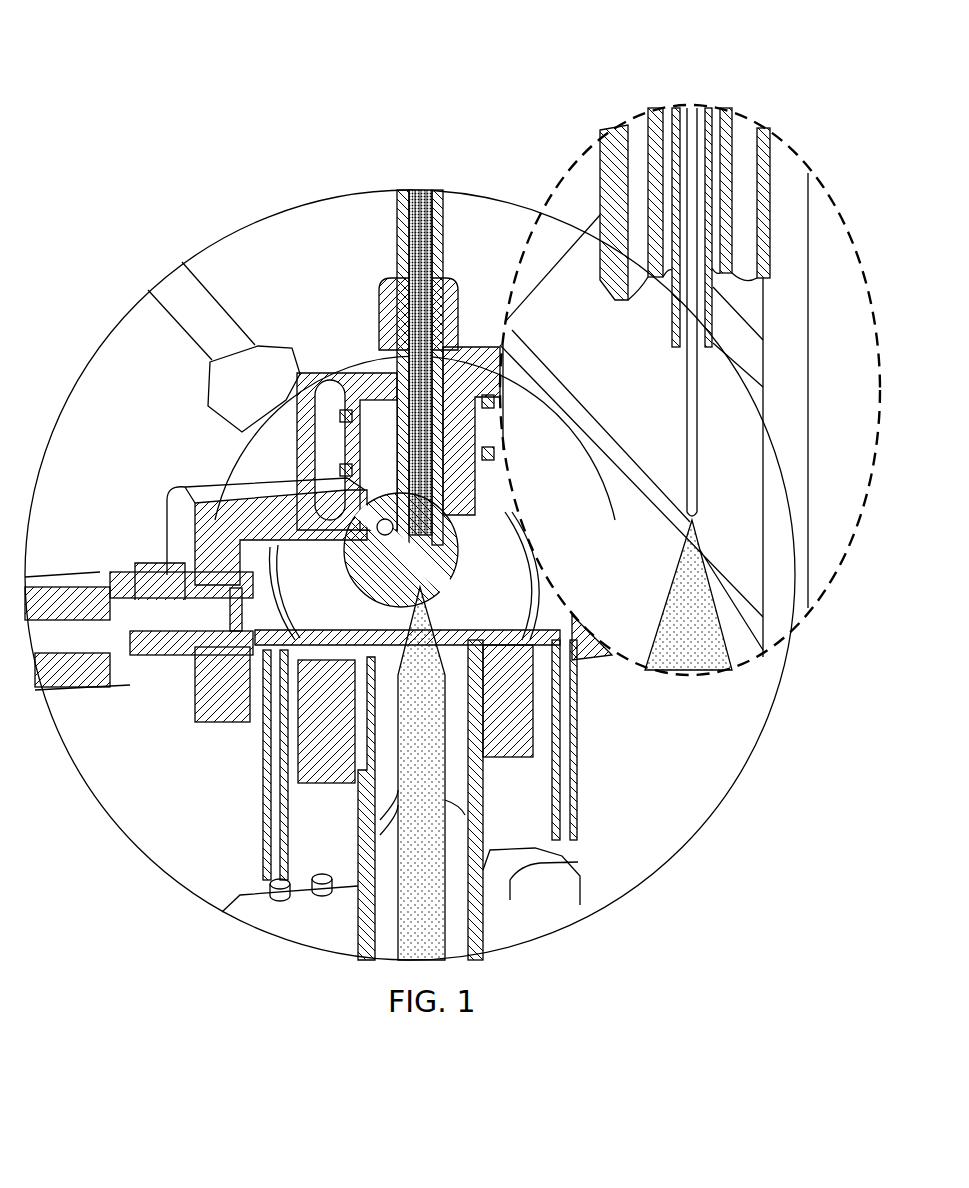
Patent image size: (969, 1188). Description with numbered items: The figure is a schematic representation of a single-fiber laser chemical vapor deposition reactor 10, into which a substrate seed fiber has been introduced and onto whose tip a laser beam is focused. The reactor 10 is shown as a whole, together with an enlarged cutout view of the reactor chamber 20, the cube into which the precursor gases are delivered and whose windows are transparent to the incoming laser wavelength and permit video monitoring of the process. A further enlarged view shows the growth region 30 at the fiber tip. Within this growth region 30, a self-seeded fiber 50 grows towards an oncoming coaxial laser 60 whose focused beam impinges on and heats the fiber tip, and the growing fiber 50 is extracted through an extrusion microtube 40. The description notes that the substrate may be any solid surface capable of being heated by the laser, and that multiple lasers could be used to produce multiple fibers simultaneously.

The reactor 10 is at (250, 58).
The reactor chamber 20 is at (352, 196).
The growth region 30 is at (785, 141).
The extrusion microtube 40 is at (672, 319).
The self-seeded fiber 50 is at (687, 409).
The coaxial laser 60 is at (708, 645).